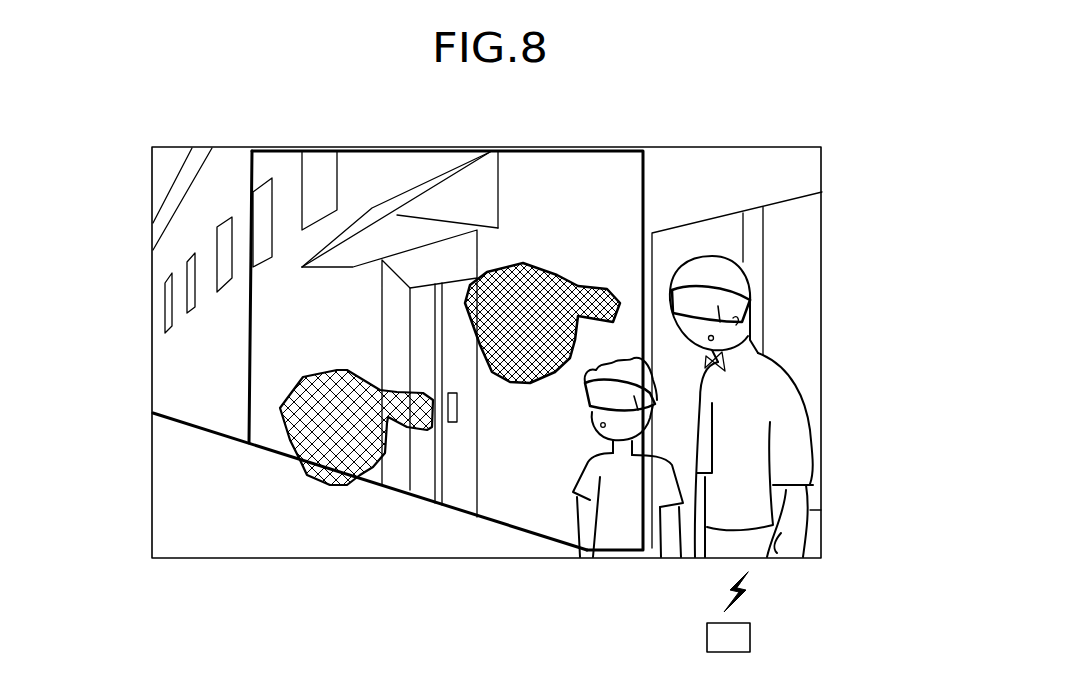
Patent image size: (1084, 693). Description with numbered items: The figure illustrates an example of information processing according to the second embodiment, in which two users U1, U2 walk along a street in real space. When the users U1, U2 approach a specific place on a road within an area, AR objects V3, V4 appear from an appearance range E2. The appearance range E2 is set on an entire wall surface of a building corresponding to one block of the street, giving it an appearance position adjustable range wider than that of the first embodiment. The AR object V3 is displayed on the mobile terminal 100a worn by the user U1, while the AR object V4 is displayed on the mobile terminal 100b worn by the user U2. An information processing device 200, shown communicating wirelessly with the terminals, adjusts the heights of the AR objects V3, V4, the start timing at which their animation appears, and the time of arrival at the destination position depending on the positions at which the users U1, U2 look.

The appearance range E2 is at (252, 183).
The AR object V3 is at (530, 290).
The AR object V4 is at (335, 407).
The user U1 is at (794, 406).
The user U2 is at (610, 491).
The mobile terminal 100a is at (714, 310).
The mobile terminal 100b is at (585, 387).
The information processing device 200 is at (750, 633).